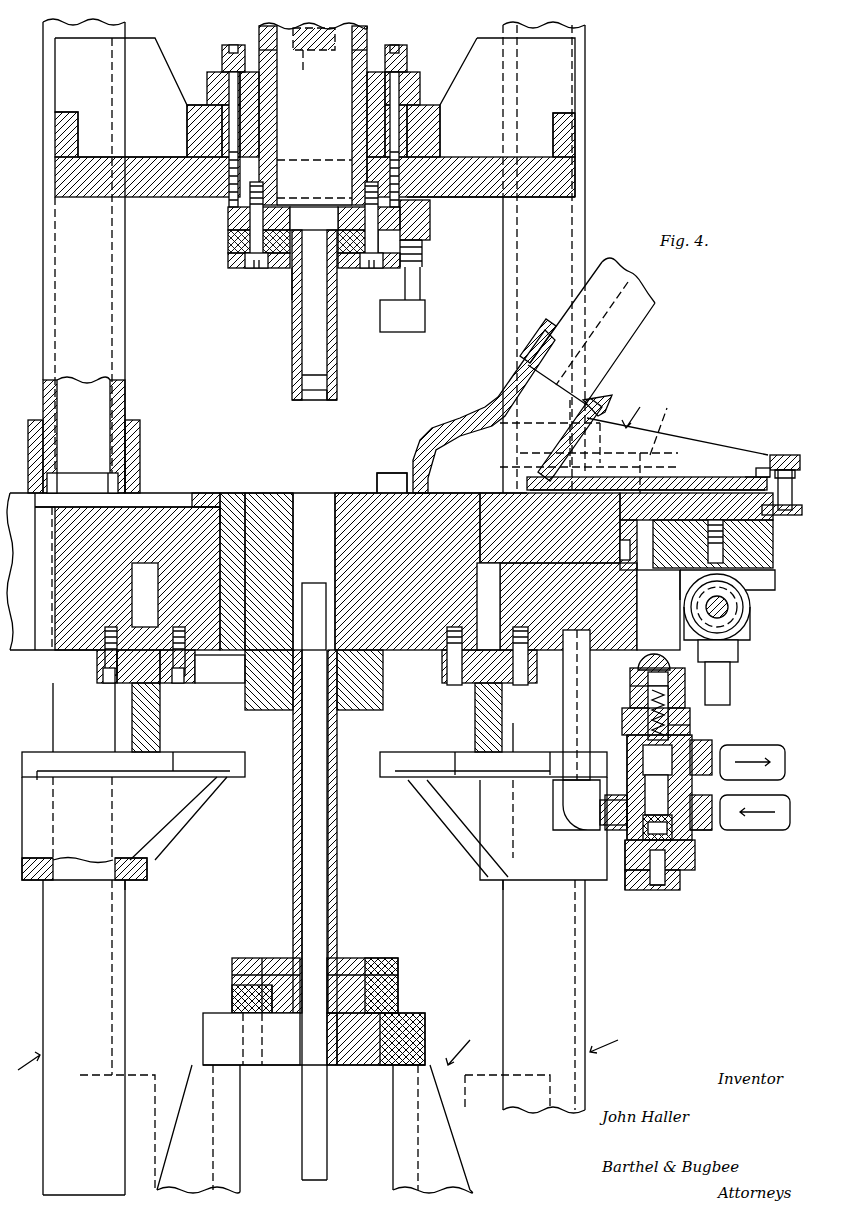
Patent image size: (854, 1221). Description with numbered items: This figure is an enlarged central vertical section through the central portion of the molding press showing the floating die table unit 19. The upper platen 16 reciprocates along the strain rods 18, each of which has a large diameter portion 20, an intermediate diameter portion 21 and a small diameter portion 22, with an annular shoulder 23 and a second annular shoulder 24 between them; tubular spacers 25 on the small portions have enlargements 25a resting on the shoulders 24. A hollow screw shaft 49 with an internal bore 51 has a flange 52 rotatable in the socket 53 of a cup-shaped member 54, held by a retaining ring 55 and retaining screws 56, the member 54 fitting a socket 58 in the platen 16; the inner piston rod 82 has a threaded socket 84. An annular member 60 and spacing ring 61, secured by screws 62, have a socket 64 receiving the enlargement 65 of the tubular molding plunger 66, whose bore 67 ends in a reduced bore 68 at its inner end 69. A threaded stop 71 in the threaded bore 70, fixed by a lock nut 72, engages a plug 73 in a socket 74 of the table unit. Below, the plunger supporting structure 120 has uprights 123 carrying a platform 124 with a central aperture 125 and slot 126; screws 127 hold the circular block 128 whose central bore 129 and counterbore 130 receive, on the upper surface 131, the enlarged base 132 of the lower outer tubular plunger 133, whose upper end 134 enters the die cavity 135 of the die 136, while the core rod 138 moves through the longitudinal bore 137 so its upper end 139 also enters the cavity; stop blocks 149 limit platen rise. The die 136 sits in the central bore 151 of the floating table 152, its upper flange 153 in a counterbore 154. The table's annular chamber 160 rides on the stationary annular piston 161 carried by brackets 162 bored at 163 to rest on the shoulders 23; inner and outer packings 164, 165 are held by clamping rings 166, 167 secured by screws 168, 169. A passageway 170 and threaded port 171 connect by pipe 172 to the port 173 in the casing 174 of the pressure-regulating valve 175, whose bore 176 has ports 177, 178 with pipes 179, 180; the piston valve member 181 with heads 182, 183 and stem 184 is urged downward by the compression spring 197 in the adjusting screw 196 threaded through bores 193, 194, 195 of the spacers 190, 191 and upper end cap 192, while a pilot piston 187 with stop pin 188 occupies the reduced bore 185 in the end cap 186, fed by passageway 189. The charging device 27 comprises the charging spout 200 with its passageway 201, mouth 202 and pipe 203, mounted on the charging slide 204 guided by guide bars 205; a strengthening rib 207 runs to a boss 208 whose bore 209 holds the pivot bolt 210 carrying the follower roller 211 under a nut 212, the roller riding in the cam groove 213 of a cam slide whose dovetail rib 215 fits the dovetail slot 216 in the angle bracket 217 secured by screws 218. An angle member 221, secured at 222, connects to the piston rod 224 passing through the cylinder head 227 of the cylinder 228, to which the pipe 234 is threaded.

The upper platen 16 is at (575, 176).
The strain rod 18 is at (322, 1062).
The floating die table unit 19 is at (18, 482).
The large diameter portion 20 is at (43, 1000).
The intermediate diameter portion 21 is at (53, 713).
The small diameter portion 22 is at (50, 394).
The annular shoulder 23 is at (128, 884).
The second annular shoulder 24 is at (72, 473).
The tubular spacer 25 is at (125, 334).
The enlargement 25a is at (140, 422).
The die cavity charging device 27 is at (633, 405).
The hollow screw shaft 49 is at (259, 32).
The internal bore 51 is at (352, 75).
The enlargement or flange 52 is at (259, 100).
The socket 53 is at (367, 98).
The cup-shaped member 54 is at (420, 90).
The retaining ring 55 is at (407, 55).
The retaining screw 56 is at (222, 60).
The socket 58 is at (440, 133).
The annular member 60 is at (228, 260).
The spacing ring 61 is at (228, 219).
The screw 62 is at (254, 268).
The socket 64 is at (228, 244).
The enlargement 65 is at (292, 280).
The tubular molding plunger 66 is at (292, 346).
The bore 67 is at (314, 218).
The reduced diameter bore 68 is at (300, 395).
The inner end 69 is at (337, 396).
The threaded bore 70 is at (455, 197).
The threaded stop 71 is at (425, 312).
The lock nut 72 is at (430, 228).
The plug 73 is at (377, 479).
The socket 74 is at (377, 480).
The inner piston rod 82 is at (367, 30).
The threaded socket 84 is at (308, 52).
The plunger supporting structure 120 is at (470, 1045).
The upright 123 is at (232, 1165).
The platform 124 is at (425, 1035).
The central aperture 125 is at (340, 1065).
The slot 126 is at (203, 1040).
The screw 127 is at (398, 975).
The circular block 128 is at (270, 958).
The central bore 129 is at (345, 958).
The counterbore 130 is at (240, 998).
The upper surface 131 is at (400, 1013).
The enlarged base 132 is at (288, 1013).
The lower outer tubular plunger 133 is at (293, 905).
The upper end 134 is at (360, 710).
The die cavity 135 is at (296, 493).
The die 136 is at (265, 493).
The longitudinal bore 137 is at (327, 840).
The core rod 138 is at (337, 885).
The upper end 139 is at (314, 583).
The stop block 149 is at (152, 1075).
The central bore 151 is at (205, 507).
The floating table 152 is at (155, 507).
The upper flange 153 is at (232, 493).
The counterbore 154 is at (208, 493).
The annular chamber 160 is at (147, 595).
The annular piston 161 is at (160, 718).
The bracket 162 is at (175, 812).
The bore 163 is at (60, 868).
The inner annular packing 164 is at (132, 633).
The outer annular packing 165 is at (159, 644).
The inner clamping ring 166 is at (202, 666).
The outer clamping ring 167 is at (97, 670).
The screw 168 is at (184, 683).
The screw 169 is at (106, 683).
The passageway 170 is at (557, 571).
The threaded port 171 is at (545, 650).
The pipe 172 is at (563, 700).
The port 173 is at (578, 815).
The casing 174 is at (627, 752).
The pressure-regulating valve 175 is at (706, 735).
The bore 176 is at (627, 790).
The threaded port 177 is at (712, 752).
The threaded port 178 is at (712, 825).
The pipe 179 is at (770, 745).
The pipe 180 is at (770, 830).
The piston valve member 181 is at (700, 840).
The head 182 is at (658, 760).
The head 183 is at (659, 827).
The stem 184 is at (660, 795).
The reduced diameter bore 185 is at (695, 860).
The end cap 186 is at (680, 875).
The pilot piston 187 is at (665, 870).
The stop pin 188 is at (660, 890).
The passageway 189 is at (625, 880).
The annular member 190 is at (622, 718).
The annular member 191 is at (630, 692).
The upper end cap 192 is at (638, 663).
The threaded bore 193 is at (668, 700).
The threaded bore 194 is at (676, 690).
The threaded bore 195 is at (678, 672).
The adjusting screw 196 is at (665, 668).
The compression spring 197 is at (690, 712).
The charging spout 200 is at (500, 388).
The powdered material passageway 201 is at (490, 392).
The mouth 202 is at (515, 452).
The pipe 203 is at (630, 337).
The charging slide 204 is at (740, 477).
The guide bar 205 is at (700, 400).
The strengthening rib 207 is at (668, 450).
The boss 208 is at (760, 468).
The bore 209 is at (756, 477).
The pivot bolt 210 is at (785, 455).
The follower roller 211 is at (785, 515).
The nut 212 is at (780, 468).
The cam groove 213 is at (773, 535).
The dovetail rib 215 is at (773, 560).
The dovetail slot 216 is at (668, 570).
The angle bracket 217 is at (760, 575).
The screw 218 is at (630, 606).
The angle member 221 is at (740, 600).
The securing point 222 is at (712, 563).
The piston rod 224 is at (743, 630).
The cylinder head 227 is at (750, 625).
The cylinder 228 is at (735, 650).
The pipe 234 is at (730, 678).